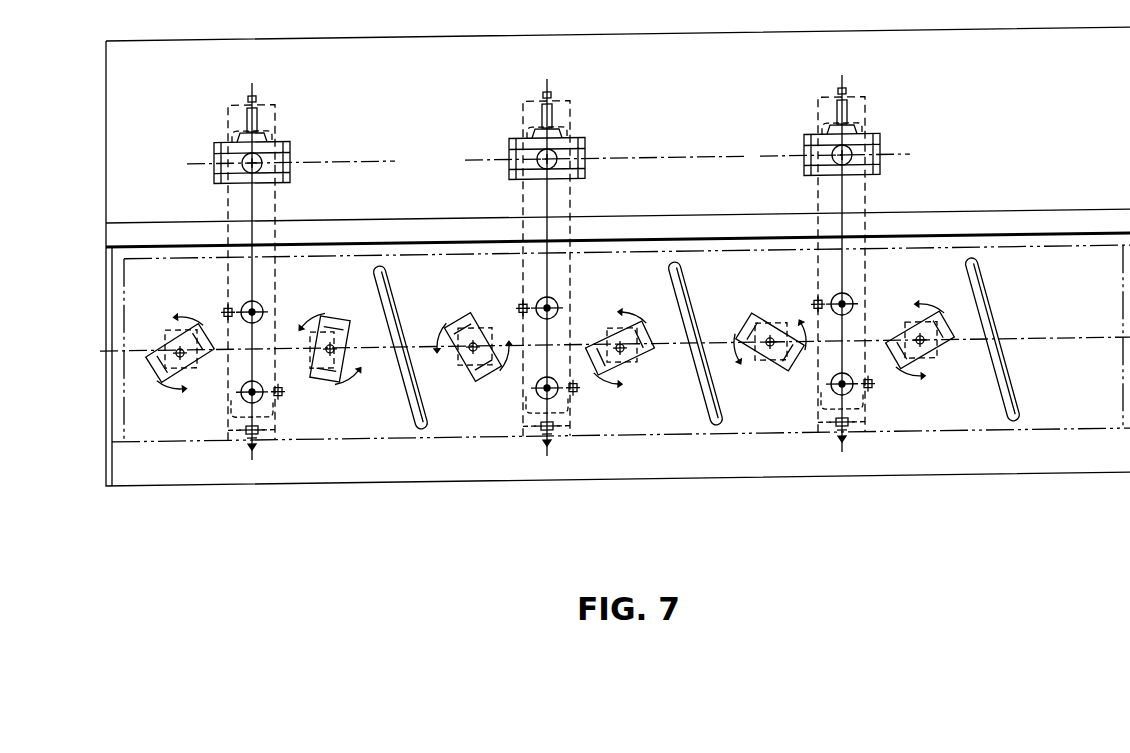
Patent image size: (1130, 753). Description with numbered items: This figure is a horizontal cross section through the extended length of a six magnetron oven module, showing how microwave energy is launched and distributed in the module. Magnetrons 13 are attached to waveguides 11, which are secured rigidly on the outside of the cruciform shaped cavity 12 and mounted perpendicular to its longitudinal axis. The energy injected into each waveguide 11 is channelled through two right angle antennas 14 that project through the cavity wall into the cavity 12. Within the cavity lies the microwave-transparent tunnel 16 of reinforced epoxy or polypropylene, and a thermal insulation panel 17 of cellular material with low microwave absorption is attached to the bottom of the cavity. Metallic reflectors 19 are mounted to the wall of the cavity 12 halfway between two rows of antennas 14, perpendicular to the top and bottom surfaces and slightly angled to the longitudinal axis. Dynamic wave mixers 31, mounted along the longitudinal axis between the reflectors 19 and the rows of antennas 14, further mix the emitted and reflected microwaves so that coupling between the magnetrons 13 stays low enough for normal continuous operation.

The waveguide 11 is at (223, 115).
The cruciform shaped tunnel cavity 12 is at (1007, 232).
The magnetron 13 is at (282, 142).
The right angle antenna 14 is at (547, 393).
The tunnel 16 is at (1075, 236).
The thermal insulation panel 17 is at (645, 225).
The metallic reflector 19 is at (416, 425).
The dynamic wave mixer 31 is at (792, 367).